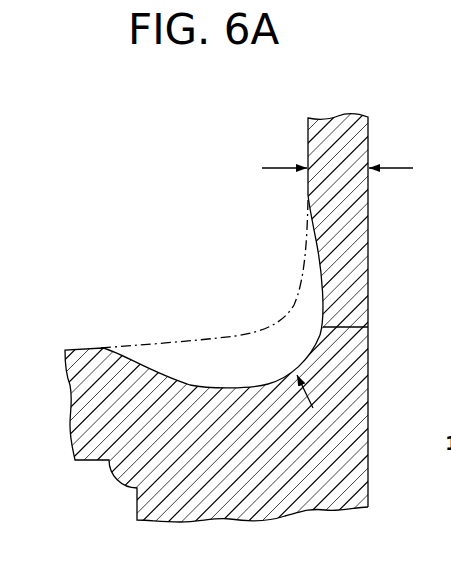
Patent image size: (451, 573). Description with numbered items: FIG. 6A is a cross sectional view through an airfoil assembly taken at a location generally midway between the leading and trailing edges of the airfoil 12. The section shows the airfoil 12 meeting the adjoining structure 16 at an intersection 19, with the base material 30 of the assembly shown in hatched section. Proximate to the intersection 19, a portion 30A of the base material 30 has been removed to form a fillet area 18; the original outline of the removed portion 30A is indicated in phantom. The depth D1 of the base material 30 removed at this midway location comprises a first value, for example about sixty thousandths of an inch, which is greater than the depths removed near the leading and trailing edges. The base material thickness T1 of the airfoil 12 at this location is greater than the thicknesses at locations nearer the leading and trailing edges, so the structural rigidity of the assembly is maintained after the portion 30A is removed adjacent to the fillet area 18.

The base material 30 is at (335, 130).
The airfoil 12 is at (371, 146).
The second member (flange) 16 is at (70, 401).
The fillet area 18 is at (289, 307).
The portion of the base material 30A is at (159, 342).
The intersection 19 is at (343, 327).
The depth D1 is at (267, 327).
The base material thickness T1 is at (397, 168).